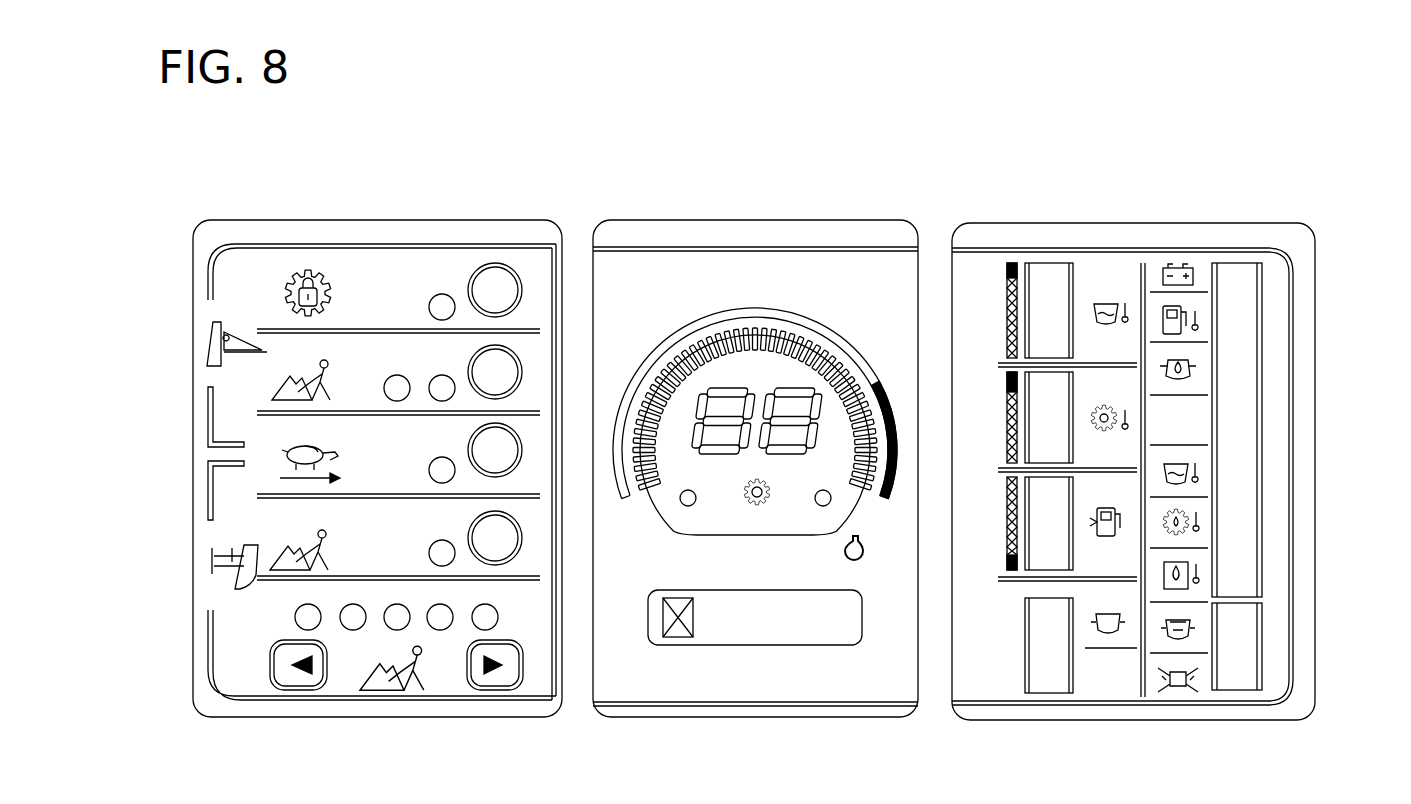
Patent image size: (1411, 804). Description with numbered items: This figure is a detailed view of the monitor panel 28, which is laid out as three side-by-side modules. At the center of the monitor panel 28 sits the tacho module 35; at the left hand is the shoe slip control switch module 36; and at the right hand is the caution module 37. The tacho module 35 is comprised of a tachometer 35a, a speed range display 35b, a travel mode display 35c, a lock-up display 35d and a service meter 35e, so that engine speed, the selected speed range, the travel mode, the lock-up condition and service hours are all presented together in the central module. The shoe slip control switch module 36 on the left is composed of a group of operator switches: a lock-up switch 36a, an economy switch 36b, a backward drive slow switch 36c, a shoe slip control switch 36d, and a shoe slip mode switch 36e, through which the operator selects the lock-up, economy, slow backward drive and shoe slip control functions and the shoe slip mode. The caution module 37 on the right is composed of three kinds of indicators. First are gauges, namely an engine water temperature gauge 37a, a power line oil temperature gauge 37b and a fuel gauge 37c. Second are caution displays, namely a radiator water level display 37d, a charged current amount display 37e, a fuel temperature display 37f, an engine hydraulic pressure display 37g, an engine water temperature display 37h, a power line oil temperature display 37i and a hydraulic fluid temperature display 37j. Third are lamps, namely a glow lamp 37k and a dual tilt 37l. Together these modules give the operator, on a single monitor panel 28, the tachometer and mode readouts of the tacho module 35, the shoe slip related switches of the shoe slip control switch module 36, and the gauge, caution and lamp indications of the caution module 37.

The monitor panel 28 is at (1224, 153).
The tacho module 35 is at (757, 222).
The tachometer 35a is at (718, 333).
The speed range display 35b is at (790, 388).
The travel mode display 35c is at (785, 517).
The lock-up display 35d is at (745, 492).
The service meter 35e is at (768, 633).
The shoe slip control switch module 36 is at (433, 220).
The lock-up switch 36a is at (471, 271).
The economy switch 36b is at (512, 349).
The backward drive slow switch 36c is at (410, 439).
The shoe slip control switch 36d is at (395, 531).
The shoe slip mode switch 36e is at (268, 670).
The caution module 37 is at (1124, 224).
The engine water temperature gauge 37a is at (1052, 268).
The power line oil temperature gauge 37b is at (1037, 415).
The fuel gauge 37c is at (1042, 522).
The radiator water level display 37d is at (1042, 643).
The charged current amount display 37e is at (1232, 272).
The fuel temperature display 37f is at (1232, 320).
The engine hydraulic pressure display 37g is at (1232, 368).
The engine water temperature display 37h is at (1232, 468).
The power line oil temperature display 37i is at (1232, 522).
The hydraulic fluid temperature display 37j is at (1232, 570).
The glow lamp 37k is at (1232, 627).
The dual tilt 37l is at (1232, 668).